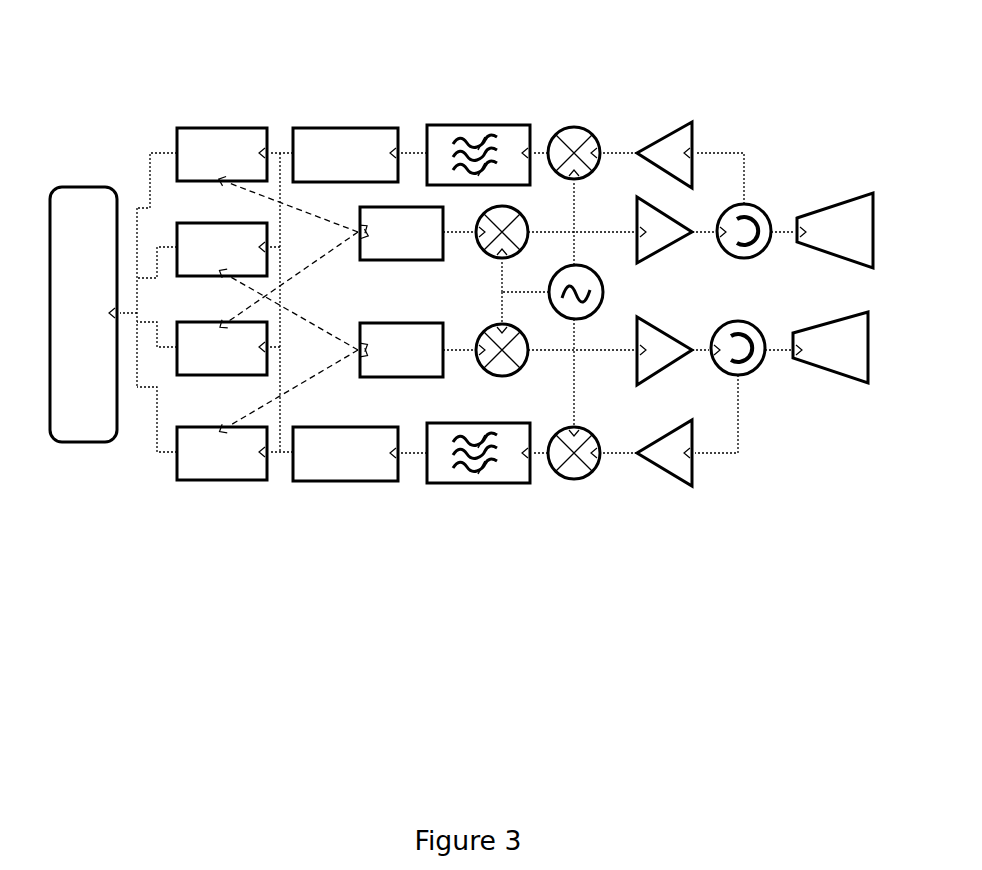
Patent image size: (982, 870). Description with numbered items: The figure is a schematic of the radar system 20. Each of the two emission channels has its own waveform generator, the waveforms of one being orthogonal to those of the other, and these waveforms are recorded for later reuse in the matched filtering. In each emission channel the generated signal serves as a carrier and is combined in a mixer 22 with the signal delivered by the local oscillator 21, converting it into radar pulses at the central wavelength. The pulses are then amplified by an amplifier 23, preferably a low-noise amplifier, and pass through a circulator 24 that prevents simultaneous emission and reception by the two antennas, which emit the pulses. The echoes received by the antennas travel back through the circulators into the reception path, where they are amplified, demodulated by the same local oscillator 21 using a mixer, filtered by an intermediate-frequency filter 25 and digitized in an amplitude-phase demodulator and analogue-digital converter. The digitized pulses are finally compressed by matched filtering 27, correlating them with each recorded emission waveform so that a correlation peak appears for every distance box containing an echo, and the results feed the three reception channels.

The radar system 20 is at (250, 567).
The local oscillator 21 is at (563, 315).
The mixer 22 is at (555, 142).
The amplifier 23 is at (662, 470).
The circulator 24 is at (757, 370).
The intermediate-frequency filter 25 is at (468, 487).
The matched filtering 27 is at (192, 478).